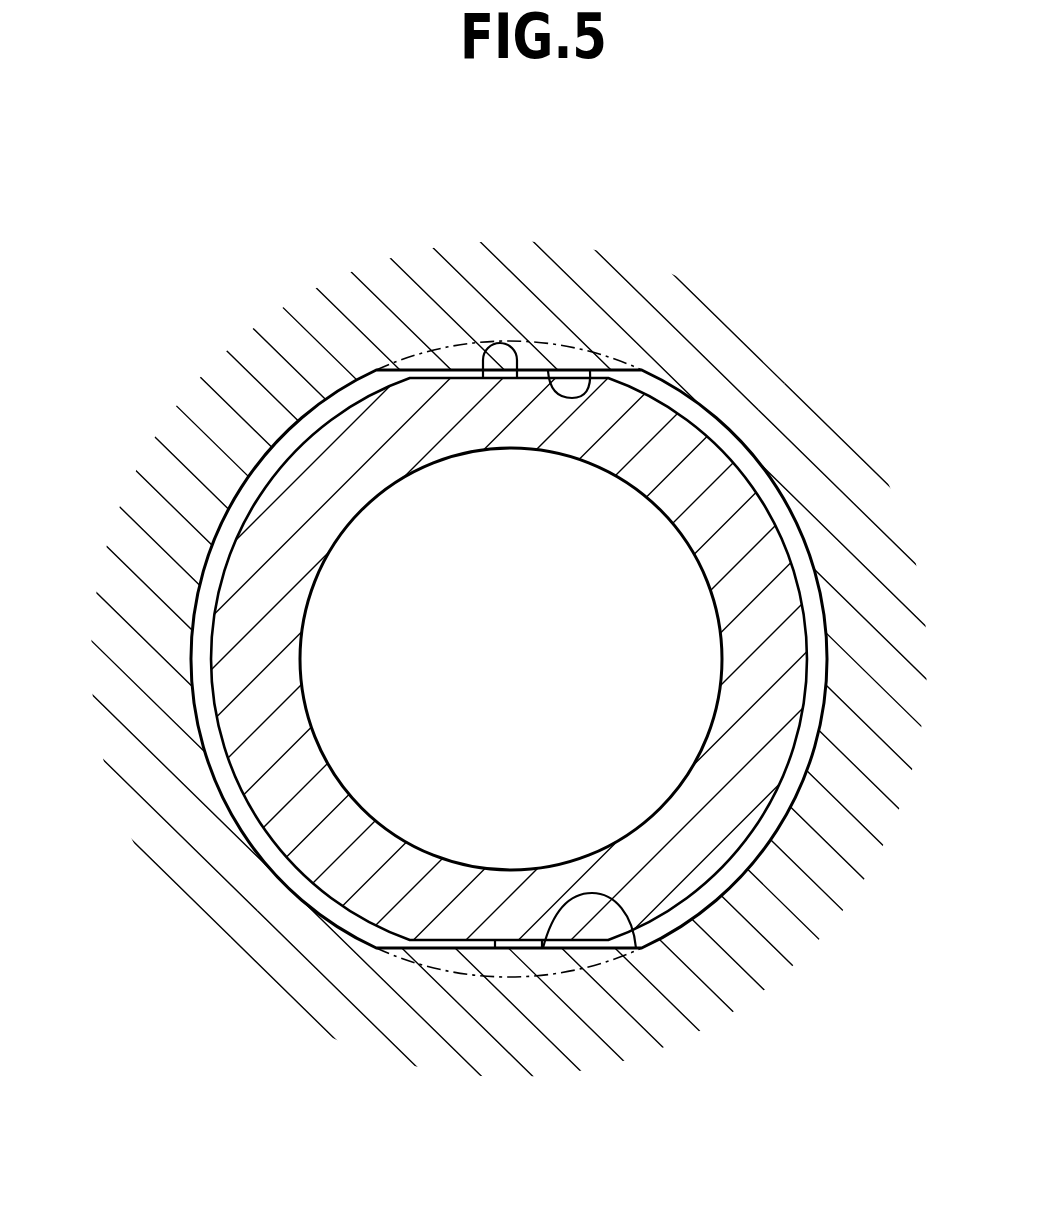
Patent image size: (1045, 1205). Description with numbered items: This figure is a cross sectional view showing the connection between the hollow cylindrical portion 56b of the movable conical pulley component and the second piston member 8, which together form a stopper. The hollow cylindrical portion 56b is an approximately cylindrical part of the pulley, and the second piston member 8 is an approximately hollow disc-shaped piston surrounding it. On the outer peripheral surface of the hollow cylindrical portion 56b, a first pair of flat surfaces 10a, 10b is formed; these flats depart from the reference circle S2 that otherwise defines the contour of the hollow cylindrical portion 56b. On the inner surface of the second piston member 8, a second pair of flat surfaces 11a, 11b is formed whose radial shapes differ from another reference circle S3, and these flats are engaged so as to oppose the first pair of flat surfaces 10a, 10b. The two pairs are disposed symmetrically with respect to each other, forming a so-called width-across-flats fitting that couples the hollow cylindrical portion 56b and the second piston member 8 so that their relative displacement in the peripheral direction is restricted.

The second piston member 8 is at (820, 438).
The hollow cylindrical portion 56b is at (753, 778).
The reference circle S2 is at (445, 347).
The reference circle S3 is at (522, 343).
The flat surface 10a is at (518, 378).
The flat surface 11a is at (595, 373).
The flat surface 10b is at (495, 946).
The flat surface 11b is at (636, 948).